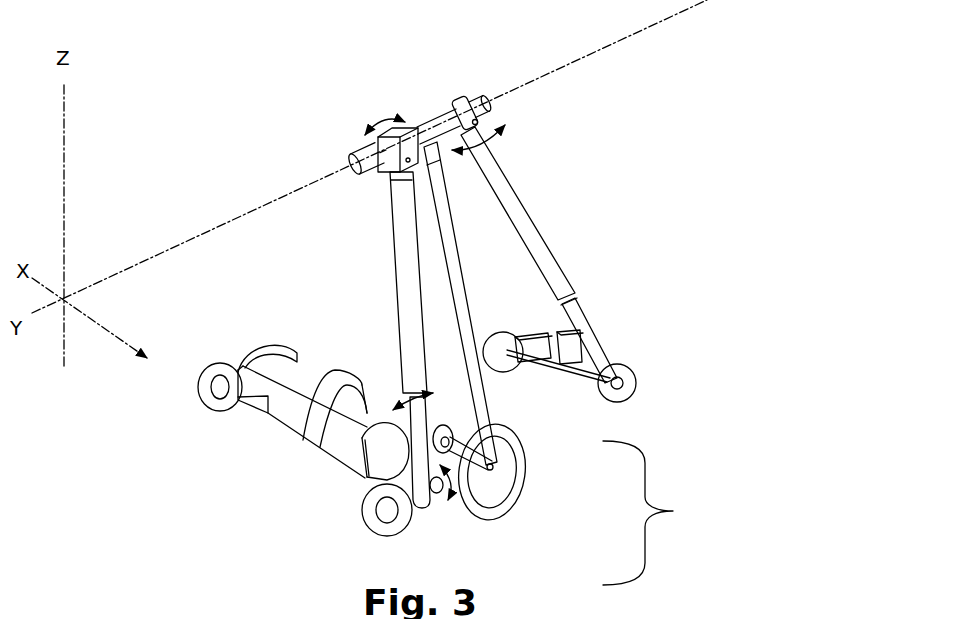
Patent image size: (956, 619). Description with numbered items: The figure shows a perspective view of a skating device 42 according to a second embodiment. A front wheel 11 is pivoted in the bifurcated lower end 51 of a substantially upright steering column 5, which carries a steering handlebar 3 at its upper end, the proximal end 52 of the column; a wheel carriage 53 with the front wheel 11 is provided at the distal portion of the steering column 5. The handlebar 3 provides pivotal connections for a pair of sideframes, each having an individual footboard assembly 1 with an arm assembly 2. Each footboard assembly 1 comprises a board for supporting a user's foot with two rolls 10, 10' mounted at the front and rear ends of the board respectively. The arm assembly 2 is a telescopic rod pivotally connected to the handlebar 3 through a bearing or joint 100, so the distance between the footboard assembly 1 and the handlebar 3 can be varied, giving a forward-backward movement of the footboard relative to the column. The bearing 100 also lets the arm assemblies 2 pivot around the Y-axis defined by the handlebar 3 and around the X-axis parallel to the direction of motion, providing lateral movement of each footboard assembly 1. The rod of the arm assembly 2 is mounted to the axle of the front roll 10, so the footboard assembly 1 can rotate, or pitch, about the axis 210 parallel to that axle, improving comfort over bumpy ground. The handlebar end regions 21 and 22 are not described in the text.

The footboard assembly 1 is at (280, 473).
The arm assembly 2 is at (405, 333).
The handlebar 3 is at (443, 143).
The steering column 5 is at (470, 303).
The front roll 10 is at (506, 439).
The rear roll 10' is at (179, 411).
The front wheel 11 is at (521, 495).
The pivot joint 21 is at (455, 503).
The post upper section 22 is at (389, 190).
The skating device 42 is at (651, 103).
The bifurcated lower end 51 is at (543, 457).
The proximal end 52 is at (432, 172).
The wheel carriage 53 is at (675, 511).
The bearing 100 is at (375, 130).
The axis 210 is at (434, 490).